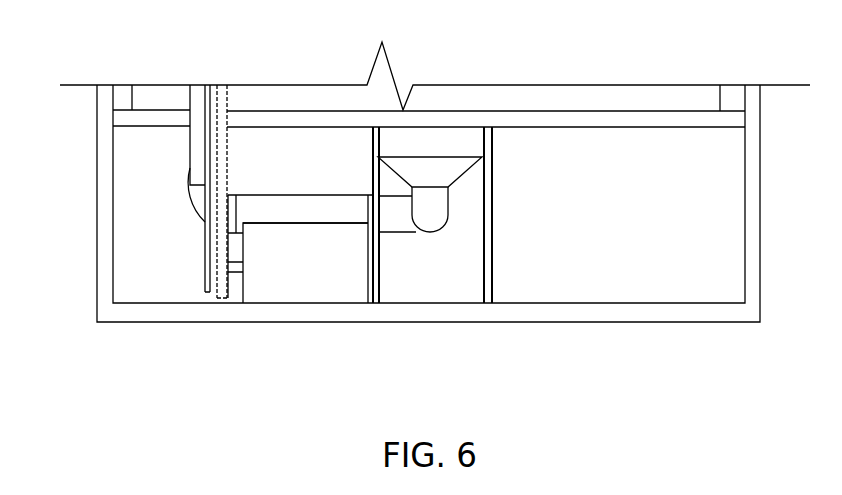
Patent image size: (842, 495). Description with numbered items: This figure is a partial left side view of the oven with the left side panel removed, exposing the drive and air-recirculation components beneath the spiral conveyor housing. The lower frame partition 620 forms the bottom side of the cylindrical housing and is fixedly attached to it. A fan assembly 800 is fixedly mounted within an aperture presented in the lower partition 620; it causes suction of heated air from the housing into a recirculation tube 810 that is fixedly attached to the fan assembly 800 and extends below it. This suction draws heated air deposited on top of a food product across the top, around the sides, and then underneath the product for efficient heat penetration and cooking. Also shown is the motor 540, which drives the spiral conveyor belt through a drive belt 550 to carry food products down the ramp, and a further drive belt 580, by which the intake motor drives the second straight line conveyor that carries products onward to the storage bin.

The recirculation tube 810 is at (200, 120).
The fan assembly 800 is at (440, 143).
The lower frame partition 620 is at (649, 118).
The drive belt 580 is at (208, 160).
The drive belt 550 is at (223, 240).
The motor 540 is at (287, 272).